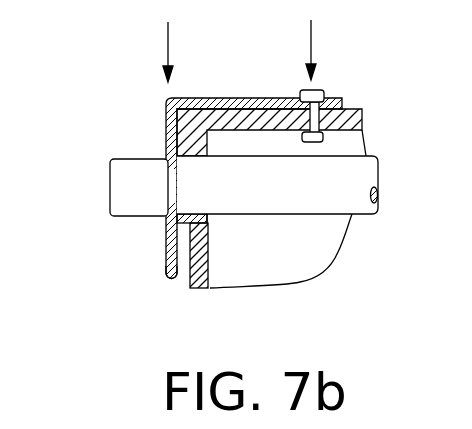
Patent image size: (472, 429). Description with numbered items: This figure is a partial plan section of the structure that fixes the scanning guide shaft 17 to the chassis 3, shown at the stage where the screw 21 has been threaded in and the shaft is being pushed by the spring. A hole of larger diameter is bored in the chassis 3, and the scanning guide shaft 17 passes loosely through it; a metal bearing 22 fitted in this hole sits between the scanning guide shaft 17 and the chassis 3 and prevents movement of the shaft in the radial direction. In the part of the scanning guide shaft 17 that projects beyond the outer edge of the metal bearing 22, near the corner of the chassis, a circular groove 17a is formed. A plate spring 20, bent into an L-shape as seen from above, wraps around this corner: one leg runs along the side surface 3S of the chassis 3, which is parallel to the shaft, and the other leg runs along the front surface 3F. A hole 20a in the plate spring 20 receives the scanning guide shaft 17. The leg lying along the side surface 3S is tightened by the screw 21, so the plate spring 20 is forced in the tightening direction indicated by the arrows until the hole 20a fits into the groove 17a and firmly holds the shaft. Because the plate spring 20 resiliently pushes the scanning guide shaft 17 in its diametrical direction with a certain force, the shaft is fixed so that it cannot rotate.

The chassis 3 is at (313, 252).
The side surface of the chassis 3S is at (363, 113).
The front surface of the chassis 3F is at (200, 290).
The scanning guide shaft 17 is at (220, 175).
The circular groove 17a is at (178, 190).
The plate spring 20 is at (260, 69).
The hole of the plate spring 20a is at (172, 228).
The screw 21 is at (323, 91).
The metal bearing 22 is at (212, 222).